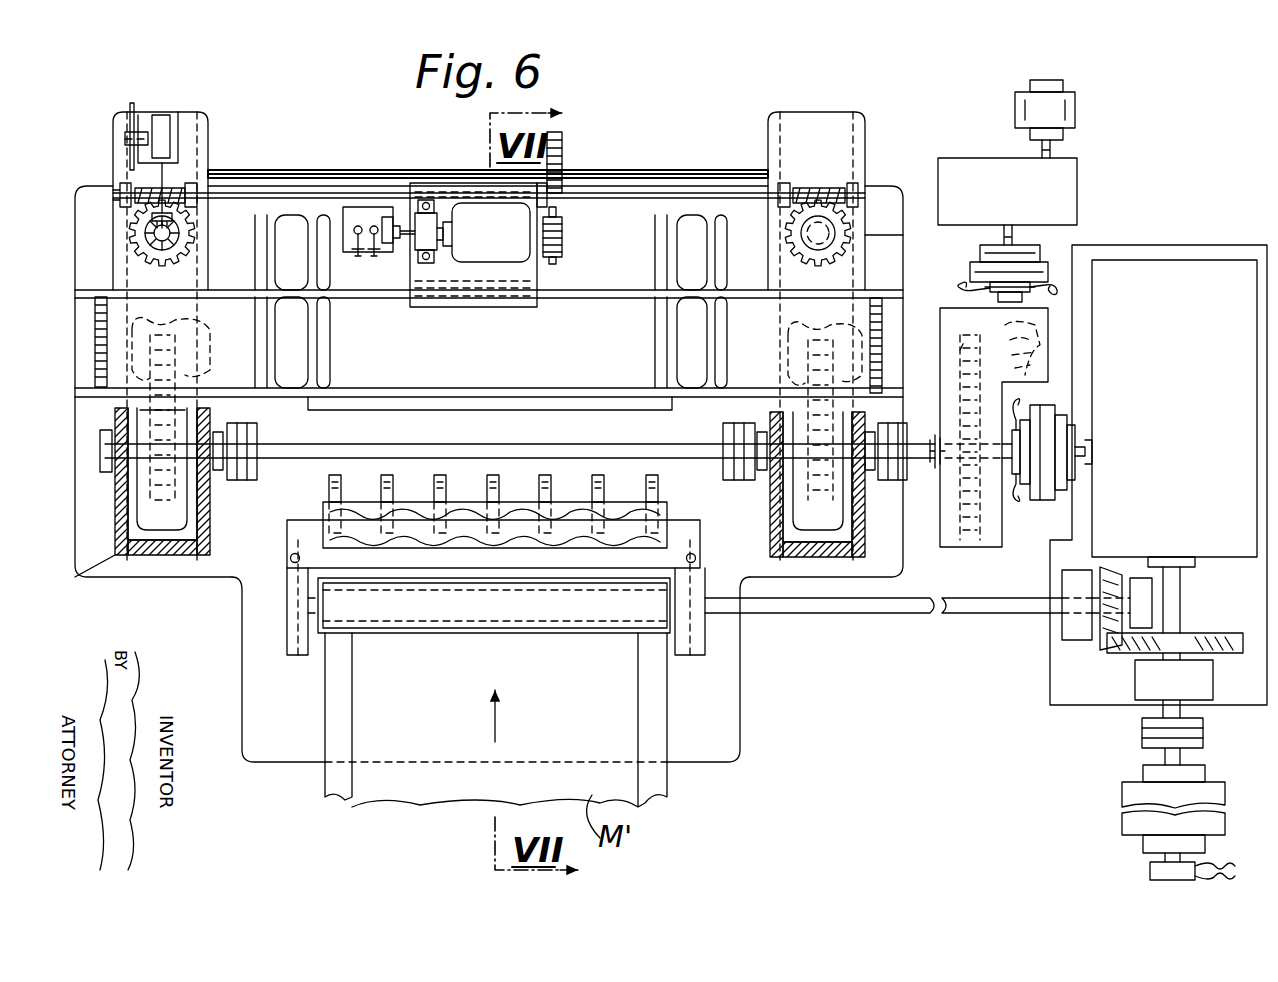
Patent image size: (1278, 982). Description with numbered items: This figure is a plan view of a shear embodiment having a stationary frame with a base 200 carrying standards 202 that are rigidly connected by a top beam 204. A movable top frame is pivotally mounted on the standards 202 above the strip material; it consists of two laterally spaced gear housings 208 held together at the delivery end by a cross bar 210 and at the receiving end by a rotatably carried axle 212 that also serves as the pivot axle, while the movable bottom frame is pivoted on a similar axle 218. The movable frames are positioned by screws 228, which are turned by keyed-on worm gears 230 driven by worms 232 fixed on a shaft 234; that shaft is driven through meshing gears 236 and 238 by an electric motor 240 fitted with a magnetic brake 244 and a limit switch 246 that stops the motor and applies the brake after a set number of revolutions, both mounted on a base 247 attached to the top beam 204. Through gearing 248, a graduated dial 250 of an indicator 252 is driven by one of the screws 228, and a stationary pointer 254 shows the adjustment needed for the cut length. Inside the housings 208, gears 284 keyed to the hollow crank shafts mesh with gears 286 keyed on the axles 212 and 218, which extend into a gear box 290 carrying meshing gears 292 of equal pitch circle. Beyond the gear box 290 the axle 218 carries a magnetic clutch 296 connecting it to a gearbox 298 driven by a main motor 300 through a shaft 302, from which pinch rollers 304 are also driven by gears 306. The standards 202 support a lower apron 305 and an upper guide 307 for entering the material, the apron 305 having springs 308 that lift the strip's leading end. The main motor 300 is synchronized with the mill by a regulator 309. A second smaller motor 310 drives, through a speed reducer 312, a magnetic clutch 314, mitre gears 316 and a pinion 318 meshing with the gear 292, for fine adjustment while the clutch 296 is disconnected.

The base 200 is at (245, 652).
The standards 202 is at (78, 579).
The top beam 204 is at (518, 352).
The gear housings 208 is at (150, 515).
The cross bar 210 is at (363, 171).
The axle 212 is at (312, 447).
The axle 218 is at (930, 443).
The screws 228 is at (840, 232).
The worm gears 230 is at (186, 242).
The worms 232 is at (175, 190).
The shaft 234 is at (575, 198).
The gear 236 is at (562, 160).
The gear 238 is at (562, 240).
The electric motor 240 is at (512, 244).
The magnetic brake 244 is at (426, 255).
The limit switch 246 is at (358, 253).
The base 247 is at (533, 280).
The gearing 248 is at (150, 240).
The graduated dial 250 is at (130, 110).
The indicator 252 is at (160, 114).
The stationary pointer 254 is at (124, 140).
The gears 284 is at (223, 328).
The gears 286 is at (190, 522).
The gear box 290 is at (945, 330).
The gear 292 is at (970, 548).
The clutch 296 is at (1040, 502).
The gearbox 298 is at (1178, 429).
The main motor 300 is at (1218, 822).
The shaft 302 is at (1172, 618).
The pinch rollers 304 is at (518, 616).
The lower guide or apron 305 is at (340, 718).
The gears 306 is at (1105, 600).
The upper guide 307 is at (640, 540).
The springs 308 is at (340, 485).
The regulator 309 is at (1150, 872).
The second smaller motor 310 is at (1068, 115).
The speed reducer 312 is at (1068, 195).
The magnetic clutch 314 is at (1045, 255).
The mitre gears 316 is at (1026, 349).
The pinion 318 is at (958, 348).